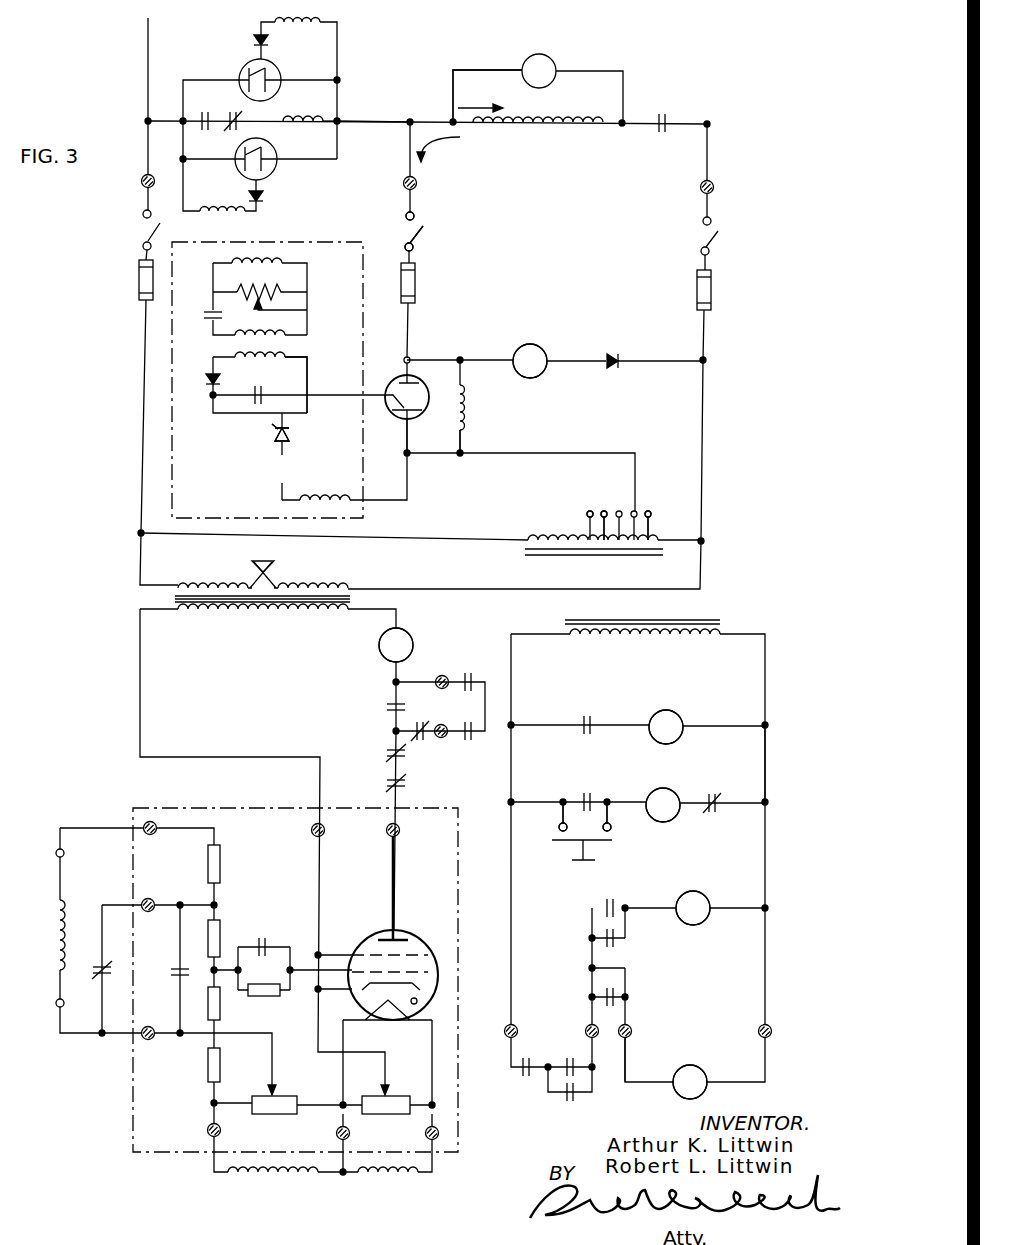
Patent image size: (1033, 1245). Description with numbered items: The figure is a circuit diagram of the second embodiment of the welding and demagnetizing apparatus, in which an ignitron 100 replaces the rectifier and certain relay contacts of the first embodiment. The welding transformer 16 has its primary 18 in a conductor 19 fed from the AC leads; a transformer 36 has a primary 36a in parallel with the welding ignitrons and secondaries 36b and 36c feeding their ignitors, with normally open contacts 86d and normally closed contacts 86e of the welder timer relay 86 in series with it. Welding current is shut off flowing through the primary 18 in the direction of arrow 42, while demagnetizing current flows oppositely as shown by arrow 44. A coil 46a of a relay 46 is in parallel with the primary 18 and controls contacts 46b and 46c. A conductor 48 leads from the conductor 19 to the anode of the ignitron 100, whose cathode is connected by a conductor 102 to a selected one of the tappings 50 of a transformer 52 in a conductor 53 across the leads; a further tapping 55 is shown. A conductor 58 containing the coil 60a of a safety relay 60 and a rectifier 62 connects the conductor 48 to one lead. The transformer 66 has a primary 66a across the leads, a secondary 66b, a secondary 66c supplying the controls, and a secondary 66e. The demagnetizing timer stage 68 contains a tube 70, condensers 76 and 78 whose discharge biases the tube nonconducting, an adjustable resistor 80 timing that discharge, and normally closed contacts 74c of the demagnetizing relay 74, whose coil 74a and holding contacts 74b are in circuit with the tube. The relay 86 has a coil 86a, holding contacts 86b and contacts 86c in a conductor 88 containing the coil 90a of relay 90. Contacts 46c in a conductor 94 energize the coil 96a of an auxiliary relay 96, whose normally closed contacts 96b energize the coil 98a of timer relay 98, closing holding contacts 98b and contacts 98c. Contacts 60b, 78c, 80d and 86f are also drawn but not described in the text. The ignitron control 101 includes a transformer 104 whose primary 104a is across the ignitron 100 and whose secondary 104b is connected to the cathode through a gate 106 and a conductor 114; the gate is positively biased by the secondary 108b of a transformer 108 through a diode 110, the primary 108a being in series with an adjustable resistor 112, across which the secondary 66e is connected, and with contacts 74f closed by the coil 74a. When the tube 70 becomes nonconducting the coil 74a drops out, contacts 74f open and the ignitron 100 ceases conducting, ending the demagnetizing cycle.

The transformer 16 is at (523, 136).
The primary 18 is at (570, 130).
The conductor 19 is at (406, 118).
The transformer 36 is at (318, 116).
The primary 36a is at (324, 126).
The secondary 36b is at (234, 207).
The secondary 36c is at (324, 21).
The arrow 42 is at (494, 107).
The arrow 44 is at (432, 143).
The relay 46 is at (560, 60).
The coil 46a is at (535, 62).
The contacts 46b is at (487, 660).
The contacts 46c is at (580, 1040).
The conductor 48 is at (416, 247).
The tappings 50 is at (640, 529).
The transformer 52 is at (540, 538).
The conductor 53 is at (455, 540).
The transformer tap 55 is at (614, 500).
The conductor 58 is at (673, 360).
The safety relay 60 is at (576, 333).
The coil 60a is at (518, 353).
The relay contacts 60b is at (392, 750).
The rectifier 62 is at (615, 352).
The transformer 66 is at (158, 594).
The primary 66a is at (229, 585).
The secondary 66b is at (250, 612).
The secondary 66c is at (722, 632).
The secondary 66e is at (284, 262).
The demagnetizing timer stage 68 is at (227, 800).
The tube 70 is at (376, 932).
The demagnetizing relay 74 is at (415, 633).
The coil 74a is at (379, 645).
The holding contacts 74b is at (392, 704).
The contacts 74c is at (97, 986).
The contacts 74f is at (208, 318).
The condenser 76 is at (270, 919).
The condenser 78 is at (178, 982).
The relay contact 78c is at (716, 795).
The adjustable resistor 80 is at (278, 1110).
The contact 80d is at (421, 723).
The timer relay 86 is at (700, 763).
The coil 86a is at (672, 773).
The holding contacts 86b is at (590, 770).
The contacts 86c is at (587, 713).
The contacts 86d is at (205, 110).
The contacts 86e is at (230, 110).
The relay contact 86f is at (522, 1076).
The conductor 88 is at (736, 763).
The relay 90 is at (686, 708).
The coil 90a is at (672, 692).
The conductor 94 is at (590, 958).
The auxiliary relay 96 is at (689, 885).
The coil 96a is at (698, 898).
The contacts 96b is at (667, 134).
The relay 98 is at (735, 1052).
The coil 98a is at (686, 1066).
The holding contacts 98b is at (568, 1100).
The contacts 98c is at (472, 740).
The ignitron 100 is at (425, 423).
The control 101 is at (163, 399).
The conductor 102 is at (406, 440).
The transformer 104 is at (480, 400).
The primary 104a is at (472, 428).
The secondary 104b is at (342, 497).
The gate 106 is at (277, 439).
The transformer 108 is at (298, 348).
The primary 108a is at (286, 333).
The secondary 108b is at (287, 366).
The diode 110 is at (208, 388).
The adjustable resistor 112 is at (285, 293).
The conductor 114 is at (340, 398).